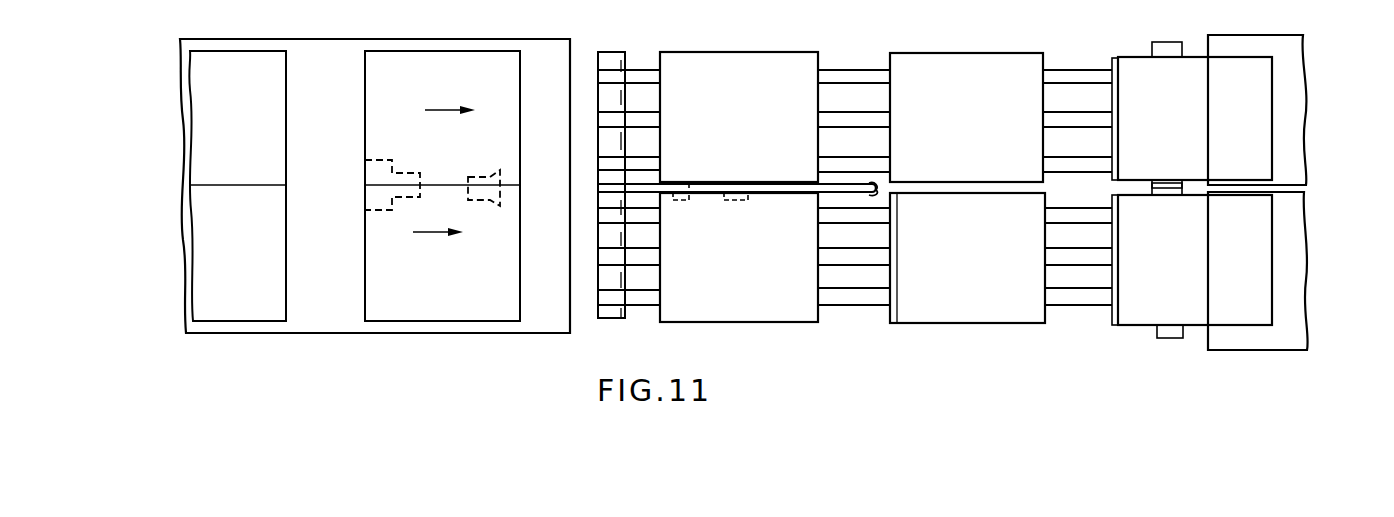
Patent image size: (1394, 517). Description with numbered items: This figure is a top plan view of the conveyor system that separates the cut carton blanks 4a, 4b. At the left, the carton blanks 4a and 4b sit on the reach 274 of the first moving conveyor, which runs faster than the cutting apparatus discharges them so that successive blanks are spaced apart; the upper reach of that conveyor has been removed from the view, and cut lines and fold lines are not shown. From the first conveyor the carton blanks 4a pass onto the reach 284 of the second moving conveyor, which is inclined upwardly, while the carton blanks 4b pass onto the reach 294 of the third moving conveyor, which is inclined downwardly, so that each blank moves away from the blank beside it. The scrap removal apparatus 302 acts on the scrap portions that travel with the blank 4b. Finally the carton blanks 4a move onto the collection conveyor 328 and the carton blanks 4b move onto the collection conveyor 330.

The reach 274 is at (312, 53).
The reach 284 is at (838, 74).
The reach 294 is at (840, 297).
The scrap removal apparatus 302 is at (837, 190).
The collection conveyor 328 is at (1296, 100).
The collection conveyor 330 is at (1291, 258).
The carton blank 4a is at (258, 130).
The carton blank 4b is at (260, 274).